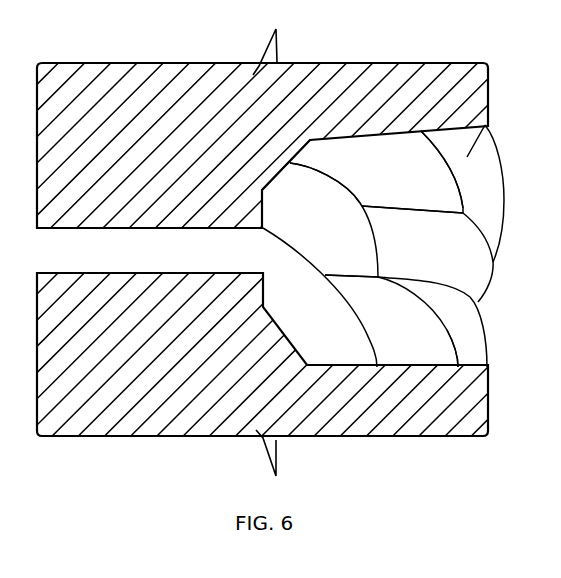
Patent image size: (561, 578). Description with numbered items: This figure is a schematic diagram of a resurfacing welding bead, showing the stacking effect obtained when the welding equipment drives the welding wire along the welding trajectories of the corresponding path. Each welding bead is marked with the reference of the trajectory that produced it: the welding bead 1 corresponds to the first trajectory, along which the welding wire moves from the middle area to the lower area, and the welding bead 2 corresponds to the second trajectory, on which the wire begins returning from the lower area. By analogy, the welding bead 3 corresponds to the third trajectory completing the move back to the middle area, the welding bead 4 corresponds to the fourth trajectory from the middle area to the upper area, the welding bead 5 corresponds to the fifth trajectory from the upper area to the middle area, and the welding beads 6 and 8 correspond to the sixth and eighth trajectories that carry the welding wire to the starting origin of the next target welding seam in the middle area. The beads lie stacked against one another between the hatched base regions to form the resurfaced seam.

The welding bead corresponding to trajectory l1 1 is at (320, 297).
The welding bead corresponding to trajectory l2 2 is at (467, 332).
The welding bead corresponding to trajectory l3 3 is at (391, 321).
The welding bead corresponding to trajectory l4 4 is at (320, 208).
The welding bead corresponding to trajectory l5 5 is at (427, 254).
The welding bead corresponding to trajectory l6 6 is at (376, 172).
The welding bead corresponding to trajectory l8 8 is at (453, 169).